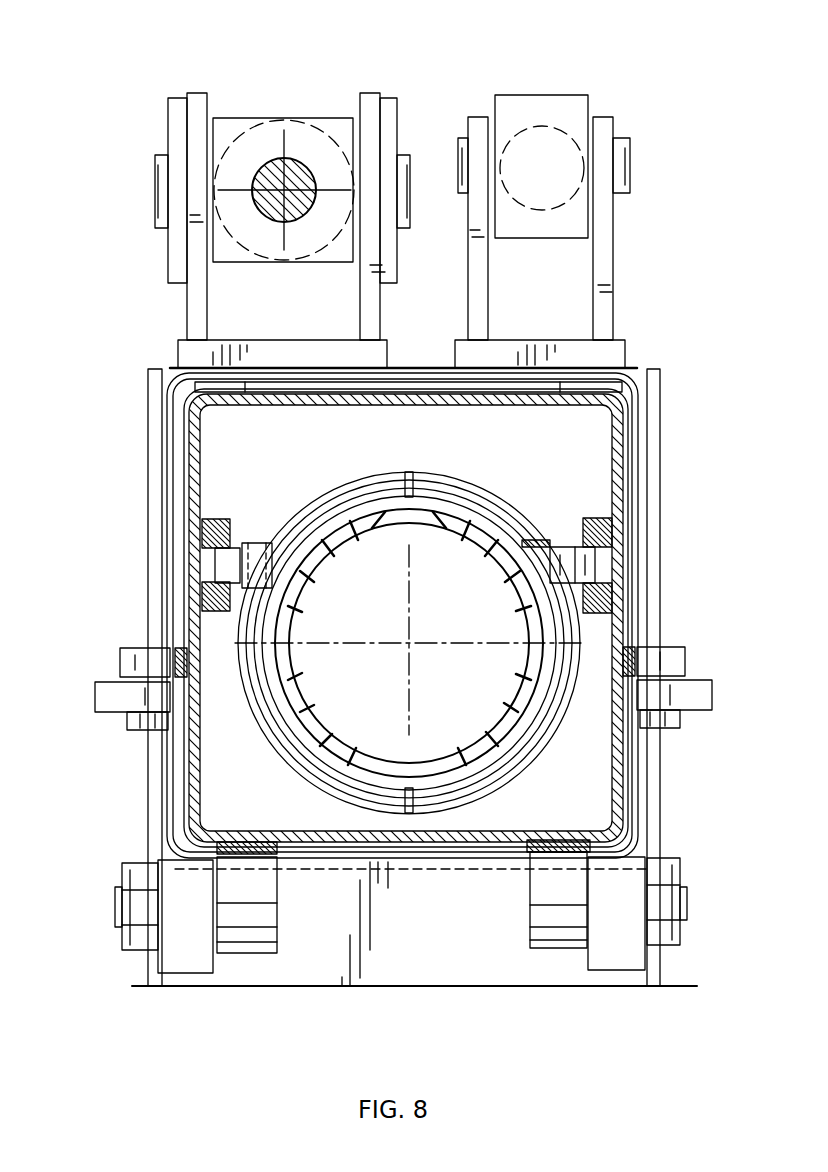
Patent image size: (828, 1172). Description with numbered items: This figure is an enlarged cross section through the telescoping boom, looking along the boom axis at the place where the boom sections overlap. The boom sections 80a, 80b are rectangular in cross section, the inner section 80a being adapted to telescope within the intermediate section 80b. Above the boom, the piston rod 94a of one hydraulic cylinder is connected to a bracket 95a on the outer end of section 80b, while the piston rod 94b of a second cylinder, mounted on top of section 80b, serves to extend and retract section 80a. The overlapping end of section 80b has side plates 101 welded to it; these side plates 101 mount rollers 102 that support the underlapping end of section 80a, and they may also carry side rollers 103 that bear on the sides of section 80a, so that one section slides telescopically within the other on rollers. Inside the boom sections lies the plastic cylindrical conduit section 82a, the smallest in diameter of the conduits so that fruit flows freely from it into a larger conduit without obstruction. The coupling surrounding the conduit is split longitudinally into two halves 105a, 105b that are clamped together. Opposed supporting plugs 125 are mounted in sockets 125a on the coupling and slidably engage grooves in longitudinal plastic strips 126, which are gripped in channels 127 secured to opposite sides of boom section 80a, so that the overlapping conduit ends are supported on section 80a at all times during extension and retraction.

The piston rod 94a is at (531, 100).
The piston rod 94b is at (283, 160).
The bracket 95a is at (175, 248).
The boom section 80a is at (187, 785).
The boom section 80b is at (172, 437).
The side plates 101 is at (140, 489).
The rollers 102 is at (252, 955).
The side rollers 103 is at (120, 668).
The coupling half 105a is at (488, 487).
The coupling half 105b is at (302, 780).
The conduit section 82a is at (325, 740).
The supporting plugs 125 is at (232, 548).
The sockets 125a is at (268, 545).
The plastic strips 126 is at (212, 522).
The channels 127 is at (210, 602).